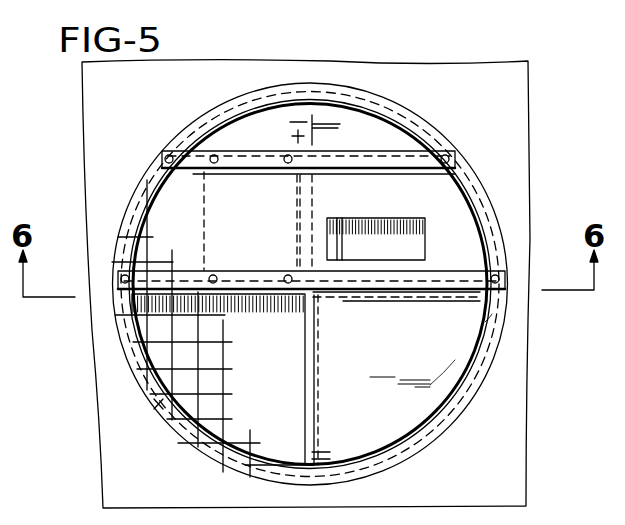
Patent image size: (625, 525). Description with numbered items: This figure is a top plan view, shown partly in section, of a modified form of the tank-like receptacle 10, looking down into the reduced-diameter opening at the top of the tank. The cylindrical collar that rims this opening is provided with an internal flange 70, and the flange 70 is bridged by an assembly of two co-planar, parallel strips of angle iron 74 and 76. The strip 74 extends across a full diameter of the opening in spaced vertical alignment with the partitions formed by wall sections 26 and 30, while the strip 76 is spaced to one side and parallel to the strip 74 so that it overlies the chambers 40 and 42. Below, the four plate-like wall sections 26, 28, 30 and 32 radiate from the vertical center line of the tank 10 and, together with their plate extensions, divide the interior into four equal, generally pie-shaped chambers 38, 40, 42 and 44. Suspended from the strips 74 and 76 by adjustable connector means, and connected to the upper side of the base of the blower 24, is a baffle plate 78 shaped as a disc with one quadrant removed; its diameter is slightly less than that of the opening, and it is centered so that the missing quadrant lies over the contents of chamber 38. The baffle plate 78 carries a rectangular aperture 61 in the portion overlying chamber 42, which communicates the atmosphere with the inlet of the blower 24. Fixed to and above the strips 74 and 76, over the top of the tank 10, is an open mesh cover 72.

The tank-like receptacle 10 is at (444, 454).
The blower 24 is at (205, 222).
The wall section 26 is at (272, 300).
The wall section 28 is at (291, 136).
The wall section 30 is at (418, 297).
The wall section 32 is at (303, 374).
The chamber 38 is at (292, 444).
The chamber 40 is at (160, 178).
The chamber 42 is at (391, 127).
The chamber 44 is at (486, 322).
The rectangular aperture 61 is at (385, 228).
The internal flange 70 is at (158, 406).
The open mesh cover 72 is at (228, 405).
The strip of angle iron 74 is at (250, 272).
The strip of angle iron 76 is at (244, 152).
The baffle plate 78 is at (450, 378).